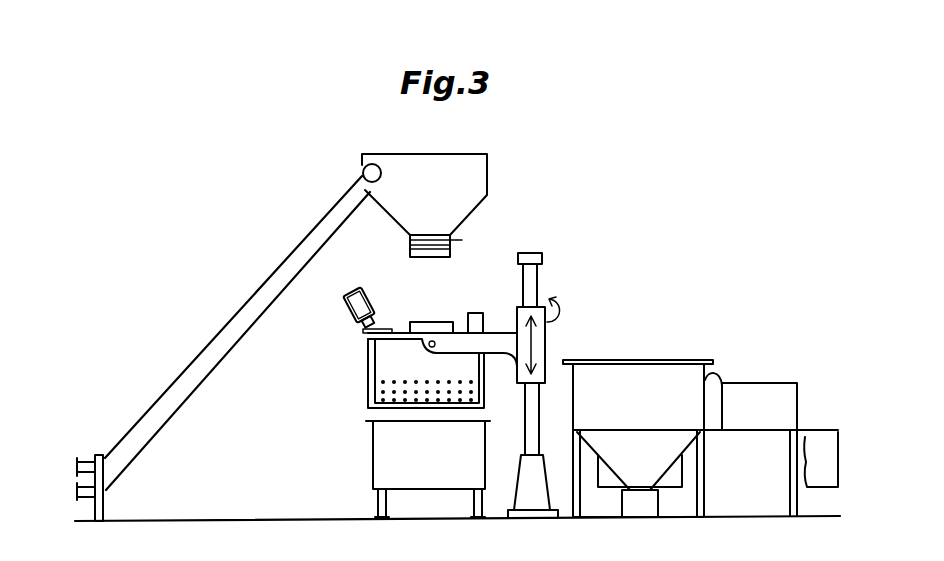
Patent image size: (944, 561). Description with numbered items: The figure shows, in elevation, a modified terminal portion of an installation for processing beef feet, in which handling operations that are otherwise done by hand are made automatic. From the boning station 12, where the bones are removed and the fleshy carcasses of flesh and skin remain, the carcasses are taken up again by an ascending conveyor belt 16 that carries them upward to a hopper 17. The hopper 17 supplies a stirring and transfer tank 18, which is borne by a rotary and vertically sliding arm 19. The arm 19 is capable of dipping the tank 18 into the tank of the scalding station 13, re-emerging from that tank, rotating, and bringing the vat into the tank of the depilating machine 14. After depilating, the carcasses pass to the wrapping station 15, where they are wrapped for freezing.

The boning station 12 is at (88, 504).
The scalding station 13 is at (382, 471).
The depilating station 14 is at (642, 372).
The wrapping station 15 is at (759, 392).
The ascending conveyor belt 16 is at (222, 357).
The hopper 17 is at (457, 172).
The stirring and transfer tank 18 is at (392, 368).
The rotary and vertically sliding arm 19 is at (497, 345).